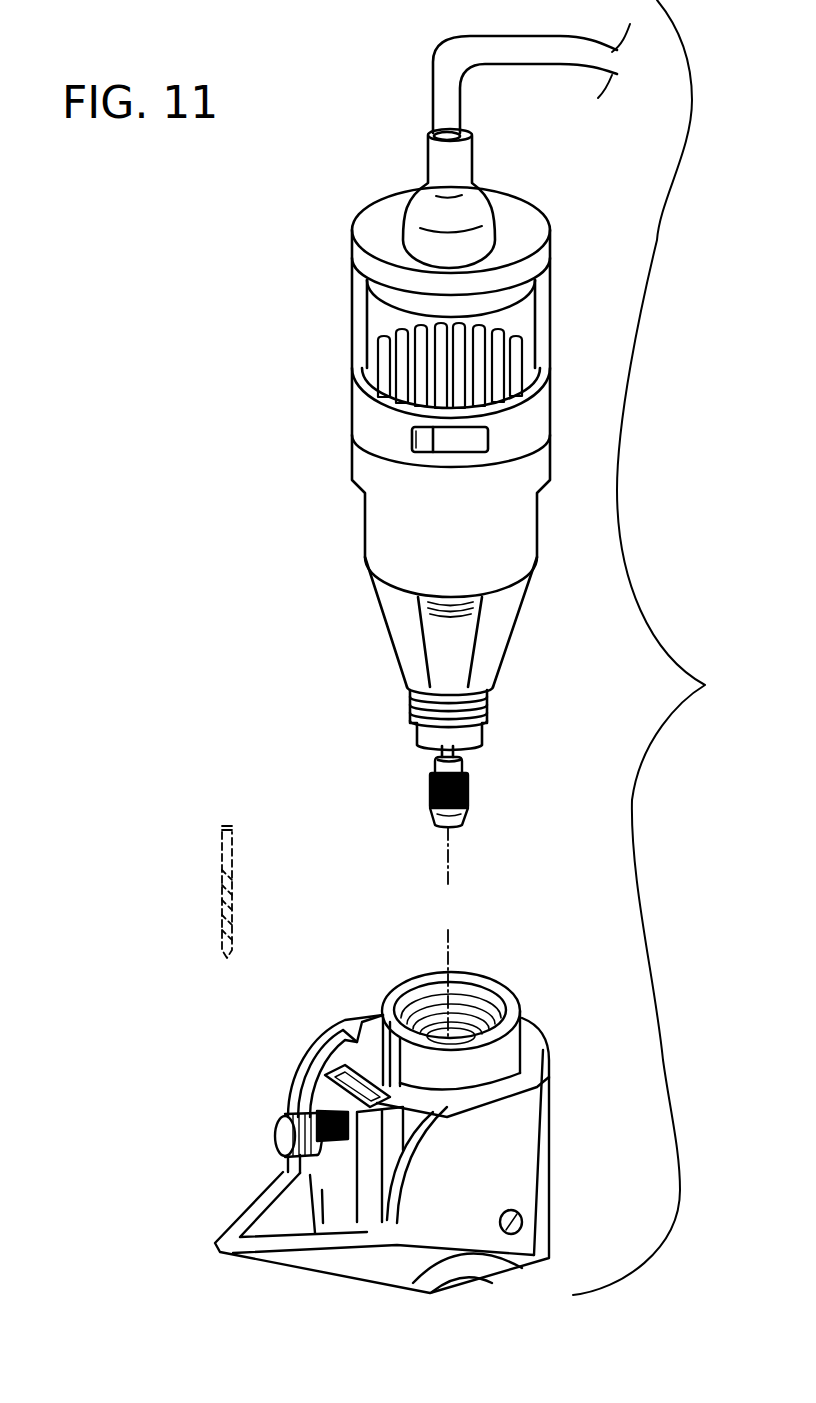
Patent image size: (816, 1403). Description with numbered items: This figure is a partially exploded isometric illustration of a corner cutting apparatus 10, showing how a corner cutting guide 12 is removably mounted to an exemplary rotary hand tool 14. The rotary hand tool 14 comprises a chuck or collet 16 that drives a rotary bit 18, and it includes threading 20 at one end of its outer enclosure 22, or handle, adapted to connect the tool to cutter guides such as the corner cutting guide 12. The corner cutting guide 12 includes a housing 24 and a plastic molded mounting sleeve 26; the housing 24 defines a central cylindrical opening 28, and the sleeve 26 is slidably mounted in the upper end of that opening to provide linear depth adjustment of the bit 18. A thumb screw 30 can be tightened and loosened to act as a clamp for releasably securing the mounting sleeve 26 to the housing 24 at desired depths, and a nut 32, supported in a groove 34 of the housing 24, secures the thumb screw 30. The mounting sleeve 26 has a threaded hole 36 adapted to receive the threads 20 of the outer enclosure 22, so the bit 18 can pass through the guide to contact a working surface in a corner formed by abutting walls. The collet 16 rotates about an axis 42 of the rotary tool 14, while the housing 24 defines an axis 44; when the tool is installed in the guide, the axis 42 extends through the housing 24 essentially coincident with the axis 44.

The corner cutting apparatus 10 is at (660, 647).
The corner cutting guide 12 is at (398, 1115).
The rotary hand tool 14 is at (436, 390).
The collet 16 is at (469, 792).
The rotary bit 18 is at (222, 857).
The threading 20 is at (490, 707).
The outer enclosure 22 is at (403, 582).
The housing 24 is at (533, 1197).
The mounting sleeve 26 is at (501, 1013).
The central cylindrical opening 28 is at (505, 1072).
The thumb screw 30 is at (293, 1142).
The nut 32 is at (327, 1083).
The groove 34 is at (332, 1037).
The threaded hole 36 is at (482, 1008).
The axis 42 is at (450, 872).
The axis 44 is at (447, 934).